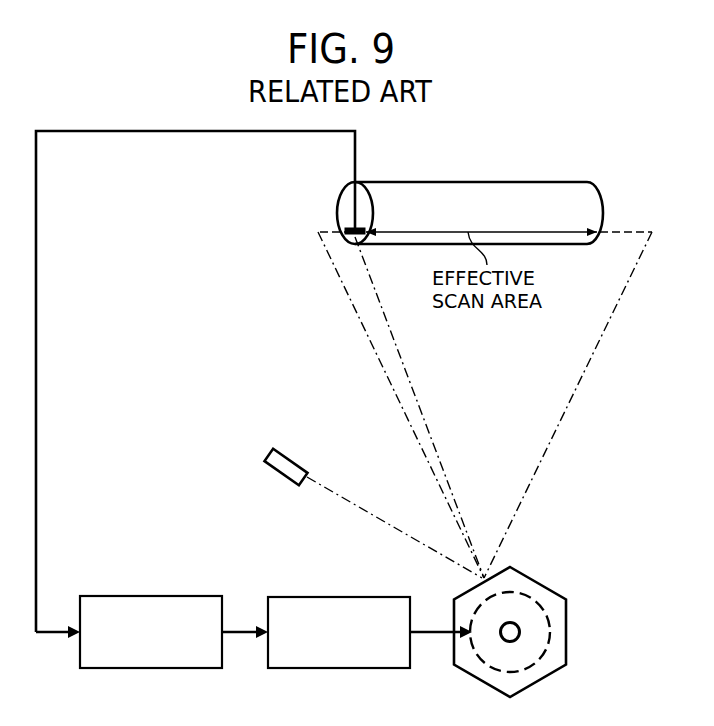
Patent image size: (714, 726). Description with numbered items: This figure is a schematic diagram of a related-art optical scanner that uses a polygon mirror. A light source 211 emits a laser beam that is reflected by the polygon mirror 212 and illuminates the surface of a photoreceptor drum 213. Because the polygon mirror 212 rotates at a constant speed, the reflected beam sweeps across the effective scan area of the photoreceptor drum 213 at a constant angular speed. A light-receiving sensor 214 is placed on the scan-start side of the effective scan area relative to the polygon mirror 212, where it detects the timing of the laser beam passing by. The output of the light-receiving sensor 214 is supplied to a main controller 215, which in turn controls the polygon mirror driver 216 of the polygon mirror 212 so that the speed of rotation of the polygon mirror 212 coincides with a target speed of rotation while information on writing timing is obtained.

The light source 211 is at (270, 456).
The polygon mirror 212 is at (570, 632).
The photoreceptor drum 213 is at (520, 182).
The light-receiving sensor 214 is at (345, 228).
The main controller 215 is at (190, 596).
The polygon mirror driver 216 is at (373, 597).